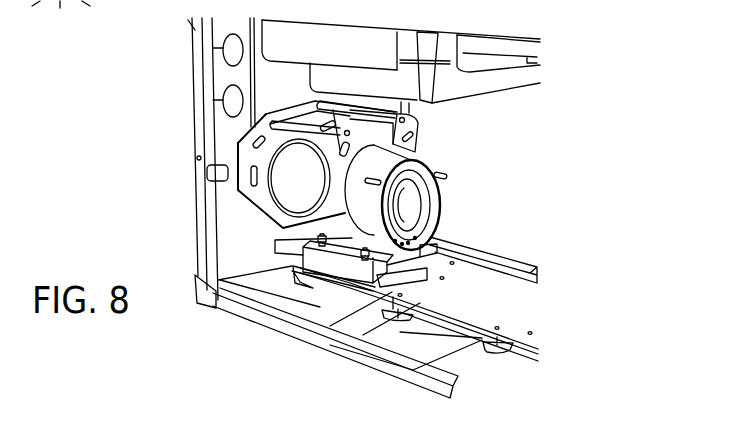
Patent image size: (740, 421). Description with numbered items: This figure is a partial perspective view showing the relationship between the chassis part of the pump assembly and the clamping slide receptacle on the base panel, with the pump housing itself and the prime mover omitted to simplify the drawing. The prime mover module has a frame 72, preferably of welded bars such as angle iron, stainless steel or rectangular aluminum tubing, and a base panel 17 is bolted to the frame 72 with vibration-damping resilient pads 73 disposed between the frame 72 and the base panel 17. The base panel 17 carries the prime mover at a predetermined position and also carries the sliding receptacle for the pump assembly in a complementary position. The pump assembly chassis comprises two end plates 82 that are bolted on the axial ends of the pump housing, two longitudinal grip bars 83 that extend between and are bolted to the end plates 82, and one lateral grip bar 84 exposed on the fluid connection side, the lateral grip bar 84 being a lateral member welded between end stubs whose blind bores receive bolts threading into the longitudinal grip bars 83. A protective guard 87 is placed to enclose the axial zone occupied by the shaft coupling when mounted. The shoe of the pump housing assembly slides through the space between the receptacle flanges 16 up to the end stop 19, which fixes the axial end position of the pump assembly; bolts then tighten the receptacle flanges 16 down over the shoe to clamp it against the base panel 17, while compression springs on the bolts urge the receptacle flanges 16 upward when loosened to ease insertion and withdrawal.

The receptacle flanges 16 is at (331, 333).
The base panel 17 is at (497, 271).
The end stop 19 is at (403, 272).
The frame 72 is at (211, 197).
The vibration-damping resilient pads 73 is at (388, 322).
The end plates 82 is at (249, 157).
The longitudinal grip bars 83 is at (257, 123).
The lateral grip bar 84 is at (290, 110).
The protective guard 87 is at (421, 183).